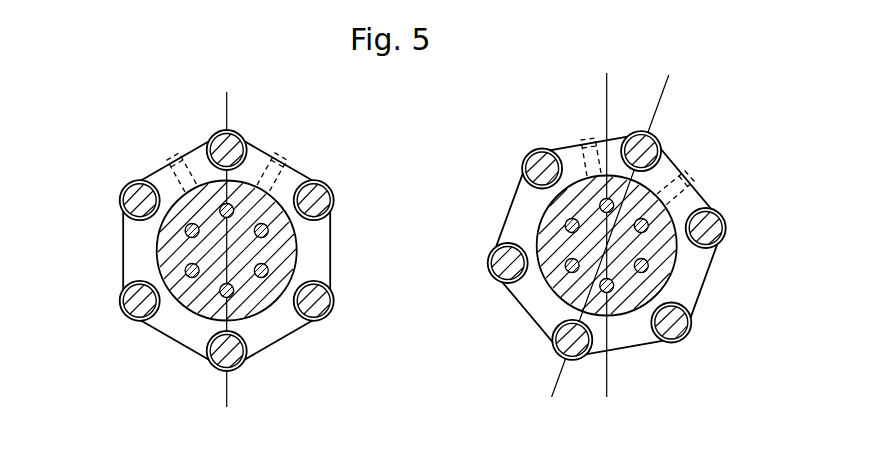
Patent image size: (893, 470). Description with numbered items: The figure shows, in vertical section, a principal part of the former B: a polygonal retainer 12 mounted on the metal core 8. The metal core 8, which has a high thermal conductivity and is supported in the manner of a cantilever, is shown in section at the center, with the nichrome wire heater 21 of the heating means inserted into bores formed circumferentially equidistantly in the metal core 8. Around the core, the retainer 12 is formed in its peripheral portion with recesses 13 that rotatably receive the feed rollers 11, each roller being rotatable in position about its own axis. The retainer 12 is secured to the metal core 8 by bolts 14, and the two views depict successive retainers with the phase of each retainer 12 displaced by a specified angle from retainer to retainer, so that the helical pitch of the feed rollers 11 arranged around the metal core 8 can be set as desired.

The metal core 8 is at (188, 312).
The feed rollers 11 is at (127, 190).
The retainers 12 is at (331, 254).
The recesses 13 is at (242, 151).
The bolts 14 is at (182, 161).
The nichrome wire heater 21 is at (186, 233).
The former B is at (121, 290).